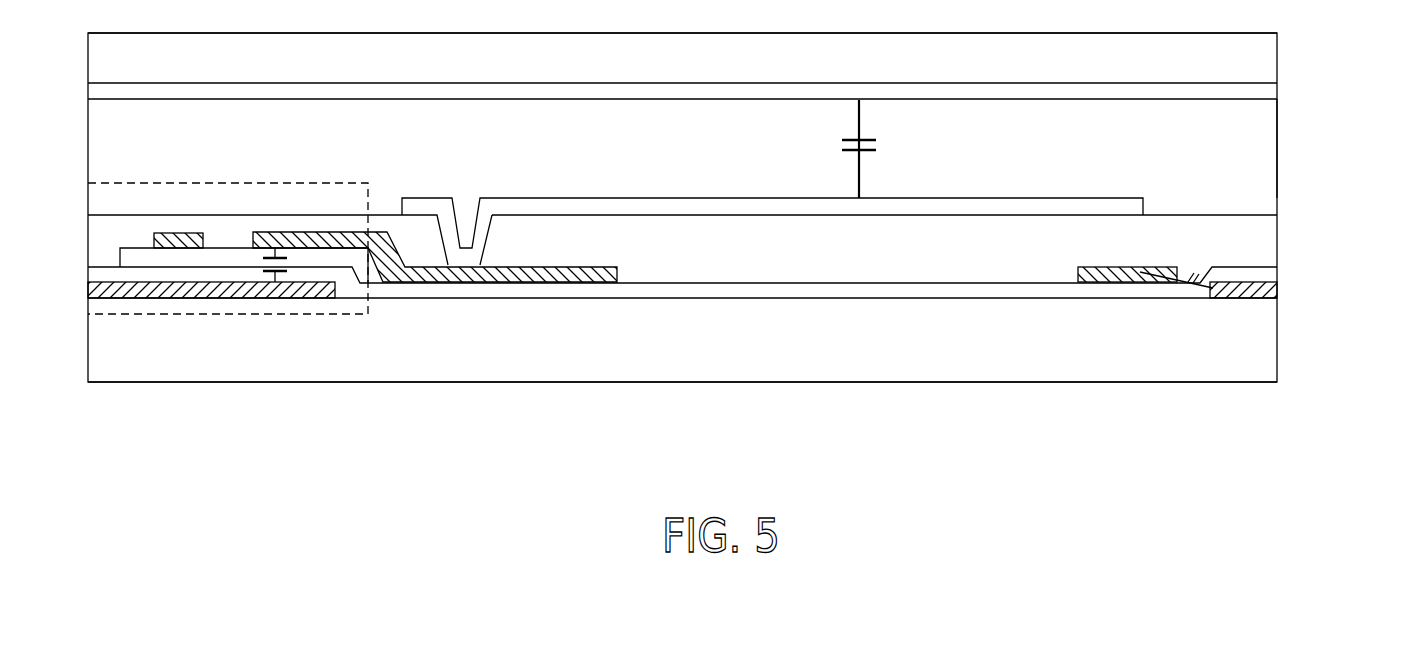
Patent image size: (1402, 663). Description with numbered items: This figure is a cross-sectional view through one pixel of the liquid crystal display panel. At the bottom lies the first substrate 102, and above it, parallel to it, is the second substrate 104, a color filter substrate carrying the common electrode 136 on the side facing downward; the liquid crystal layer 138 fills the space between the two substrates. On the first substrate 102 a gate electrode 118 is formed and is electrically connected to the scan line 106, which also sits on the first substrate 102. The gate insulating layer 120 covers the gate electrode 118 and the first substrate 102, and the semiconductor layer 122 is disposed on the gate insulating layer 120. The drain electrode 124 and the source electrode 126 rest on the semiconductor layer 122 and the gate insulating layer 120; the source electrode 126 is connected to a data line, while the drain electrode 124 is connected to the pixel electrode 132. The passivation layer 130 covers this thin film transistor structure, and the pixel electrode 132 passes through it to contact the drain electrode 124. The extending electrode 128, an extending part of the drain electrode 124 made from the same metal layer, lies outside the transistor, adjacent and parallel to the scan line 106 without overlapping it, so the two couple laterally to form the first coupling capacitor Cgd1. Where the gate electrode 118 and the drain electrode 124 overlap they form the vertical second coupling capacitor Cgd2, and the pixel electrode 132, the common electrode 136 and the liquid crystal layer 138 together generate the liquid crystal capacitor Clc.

The first substrate 102 is at (192, 374).
The second substrate 104 is at (1333, 35).
The scan line 106 is at (1268, 292).
The gate electrode 118 is at (93, 288).
The gate insulating layer 120 is at (96, 271).
The semiconductor layer 122 is at (122, 258).
The drain electrode 124 is at (587, 275).
The source electrode 126 is at (152, 242).
The extending electrode 128 is at (1132, 275).
The passivation layer 130 is at (1265, 233).
The pixel electrode 132 is at (1136, 207).
The common electrode 136 is at (1268, 92).
The liquid crystal layer 138 is at (1265, 130).
The first coupling capacitor Cgd1 is at (1181, 259).
The second coupling capacitor Cgd2 is at (283, 272).
The liquid crystal capacitor Clc is at (879, 149).